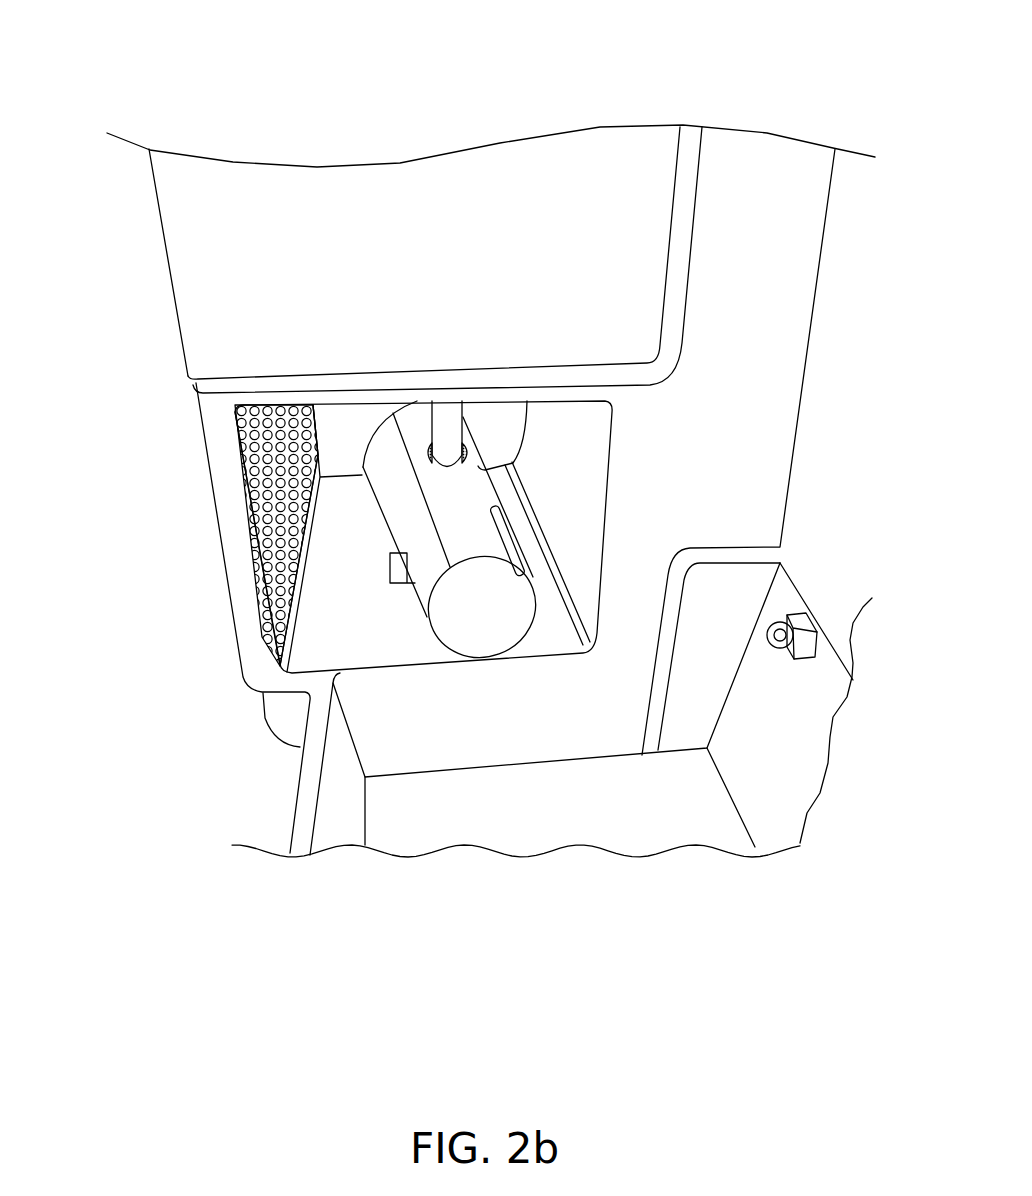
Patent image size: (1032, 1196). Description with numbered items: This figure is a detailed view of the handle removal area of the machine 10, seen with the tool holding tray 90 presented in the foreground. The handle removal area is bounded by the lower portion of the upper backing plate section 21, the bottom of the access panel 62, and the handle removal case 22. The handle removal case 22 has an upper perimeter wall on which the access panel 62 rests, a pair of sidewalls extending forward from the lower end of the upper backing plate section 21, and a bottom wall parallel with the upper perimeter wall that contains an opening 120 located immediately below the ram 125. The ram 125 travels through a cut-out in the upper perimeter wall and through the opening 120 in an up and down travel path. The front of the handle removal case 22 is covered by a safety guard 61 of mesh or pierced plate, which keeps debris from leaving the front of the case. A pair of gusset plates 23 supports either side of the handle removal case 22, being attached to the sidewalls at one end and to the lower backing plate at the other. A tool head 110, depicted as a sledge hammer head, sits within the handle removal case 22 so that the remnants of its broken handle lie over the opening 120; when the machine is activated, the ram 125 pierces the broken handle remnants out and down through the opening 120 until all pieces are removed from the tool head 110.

The dispenser assembly 10 is at (80, 55).
The upper backing plate section 21 is at (802, 272).
The handle removal case 22 is at (212, 580).
The gusset plates 23 is at (280, 717).
The safety guard 61 is at (225, 325).
The access panel 62 is at (192, 220).
The tool holding tray 90 is at (300, 780).
The tool head 110 is at (390, 587).
The opening 120 is at (390, 553).
The ram 125 is at (443, 407).